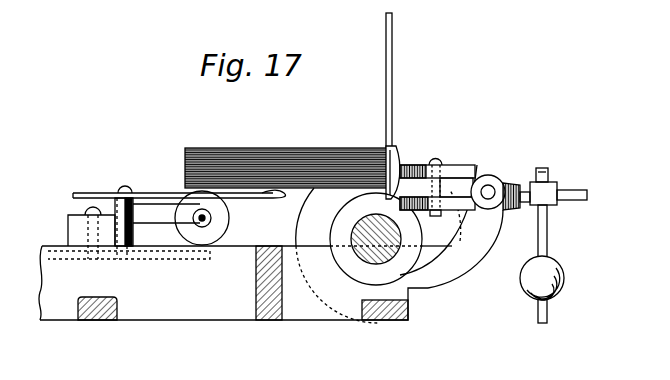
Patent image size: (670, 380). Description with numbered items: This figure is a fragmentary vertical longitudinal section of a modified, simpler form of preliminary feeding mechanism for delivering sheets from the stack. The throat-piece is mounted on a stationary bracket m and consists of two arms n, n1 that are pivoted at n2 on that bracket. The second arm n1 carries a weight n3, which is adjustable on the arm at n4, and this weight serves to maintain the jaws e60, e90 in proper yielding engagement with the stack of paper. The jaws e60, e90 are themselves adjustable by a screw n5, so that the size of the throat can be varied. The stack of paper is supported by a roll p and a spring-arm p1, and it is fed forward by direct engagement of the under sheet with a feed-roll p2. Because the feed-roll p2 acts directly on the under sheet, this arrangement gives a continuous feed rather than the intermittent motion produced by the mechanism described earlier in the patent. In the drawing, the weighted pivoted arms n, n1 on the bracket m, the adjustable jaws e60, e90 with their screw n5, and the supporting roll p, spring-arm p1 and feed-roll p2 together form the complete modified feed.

The roll p is at (186, 190).
The spring-arm p1 is at (266, 200).
The feed-roll p2 is at (340, 225).
The stationary bracket m is at (474, 252).
The arm n is at (468, 183).
The arm n1 is at (488, 192).
The pivot n2 is at (511, 184).
The weight n3 is at (563, 277).
The weight adjustment n4 is at (546, 193).
The screw n5 is at (450, 171).
The jaw e60 is at (399, 165).
The jaw e90 is at (430, 162).